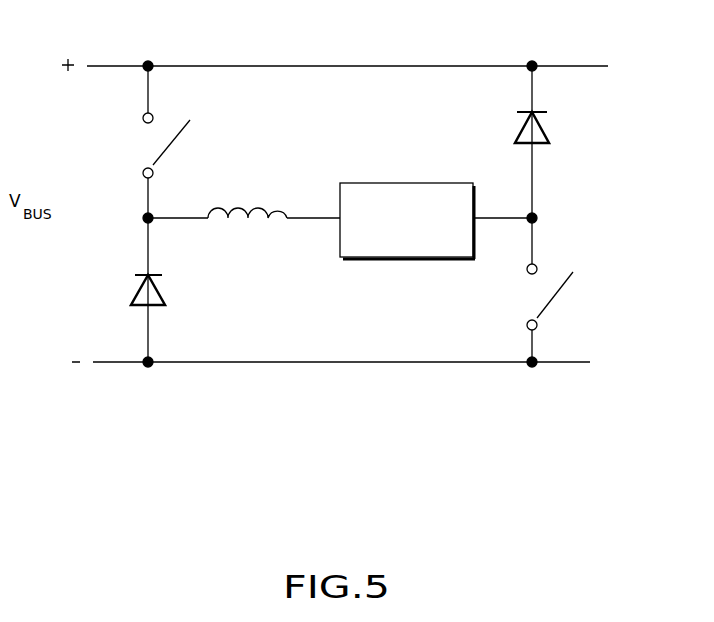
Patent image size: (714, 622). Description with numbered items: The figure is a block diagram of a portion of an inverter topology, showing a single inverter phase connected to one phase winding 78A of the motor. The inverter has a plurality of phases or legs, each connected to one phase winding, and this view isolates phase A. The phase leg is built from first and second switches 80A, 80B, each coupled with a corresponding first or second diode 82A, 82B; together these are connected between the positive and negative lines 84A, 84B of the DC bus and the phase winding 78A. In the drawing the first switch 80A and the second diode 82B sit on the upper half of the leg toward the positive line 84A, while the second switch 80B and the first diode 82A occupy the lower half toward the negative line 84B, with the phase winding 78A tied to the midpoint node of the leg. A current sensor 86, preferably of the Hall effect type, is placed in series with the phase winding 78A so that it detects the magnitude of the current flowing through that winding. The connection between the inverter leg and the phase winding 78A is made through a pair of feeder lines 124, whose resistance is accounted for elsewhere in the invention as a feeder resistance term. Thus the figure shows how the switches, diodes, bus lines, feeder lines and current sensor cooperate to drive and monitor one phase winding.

The positive line 84A is at (240, 66).
The negative line 84B is at (200, 362).
The first switch 80A is at (207, 144).
The second switch 80B is at (585, 313).
The first diode 82A is at (166, 297).
The second diode 82B is at (545, 130).
The phase winding 78A is at (253, 222).
The current sensor 86 is at (410, 257).
The feeder lines 124 is at (162, 222).